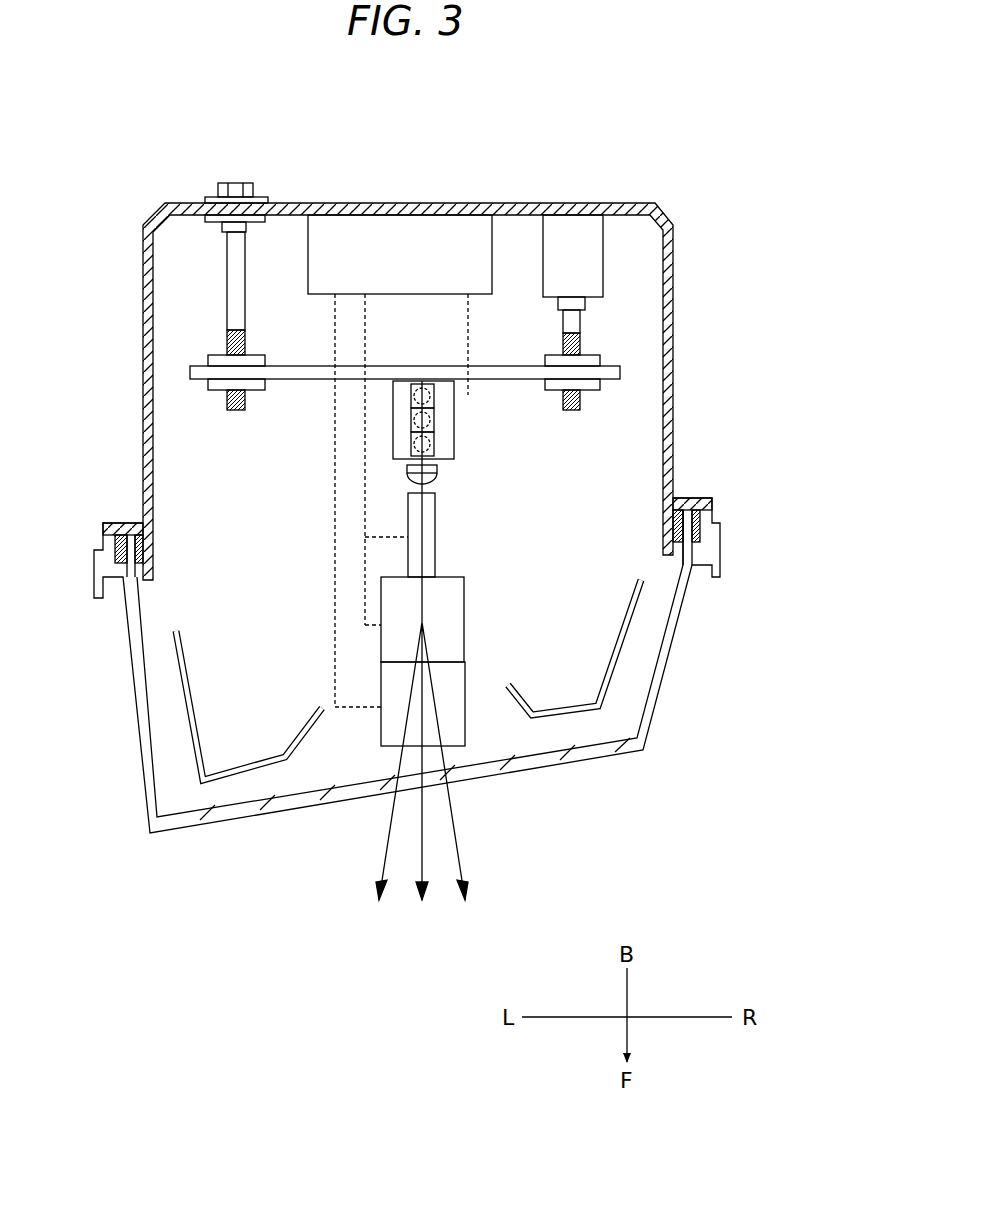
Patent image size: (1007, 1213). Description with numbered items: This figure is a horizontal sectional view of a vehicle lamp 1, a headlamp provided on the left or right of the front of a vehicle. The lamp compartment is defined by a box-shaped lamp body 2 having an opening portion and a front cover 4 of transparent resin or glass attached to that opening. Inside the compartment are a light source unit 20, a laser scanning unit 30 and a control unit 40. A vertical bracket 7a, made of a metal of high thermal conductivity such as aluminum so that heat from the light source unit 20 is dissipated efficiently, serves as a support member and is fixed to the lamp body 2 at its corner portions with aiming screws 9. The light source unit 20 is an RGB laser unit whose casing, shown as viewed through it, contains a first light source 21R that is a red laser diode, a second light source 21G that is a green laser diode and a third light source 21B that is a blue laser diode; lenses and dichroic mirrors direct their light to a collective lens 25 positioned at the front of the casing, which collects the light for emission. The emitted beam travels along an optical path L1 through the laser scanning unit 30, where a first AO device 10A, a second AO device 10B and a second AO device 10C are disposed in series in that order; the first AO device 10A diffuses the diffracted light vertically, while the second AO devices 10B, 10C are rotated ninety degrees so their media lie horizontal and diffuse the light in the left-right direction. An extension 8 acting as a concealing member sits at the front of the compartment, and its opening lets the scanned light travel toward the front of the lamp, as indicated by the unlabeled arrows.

The vehicle lamp 1 is at (723, 137).
The lamp body 2 is at (674, 238).
The front cover 4 is at (690, 605).
The vertical bracket 7a is at (620, 372).
The extension 8 is at (178, 713).
The aiming screw 9 is at (232, 259).
The first acousto-optic device 10A is at (430, 520).
The second acousto-optic device 10B is at (455, 608).
The second acousto-optic device 10C is at (455, 680).
The light source unit 20 is at (331, 452).
The third light source 21B is at (434, 396).
The second light source 21G is at (434, 420).
The first light source 21R is at (434, 444).
The collective lens 25 is at (437, 480).
The laser scanning unit 30 is at (331, 613).
The control unit 40 is at (407, 240).
The optical path L1 is at (411, 488).